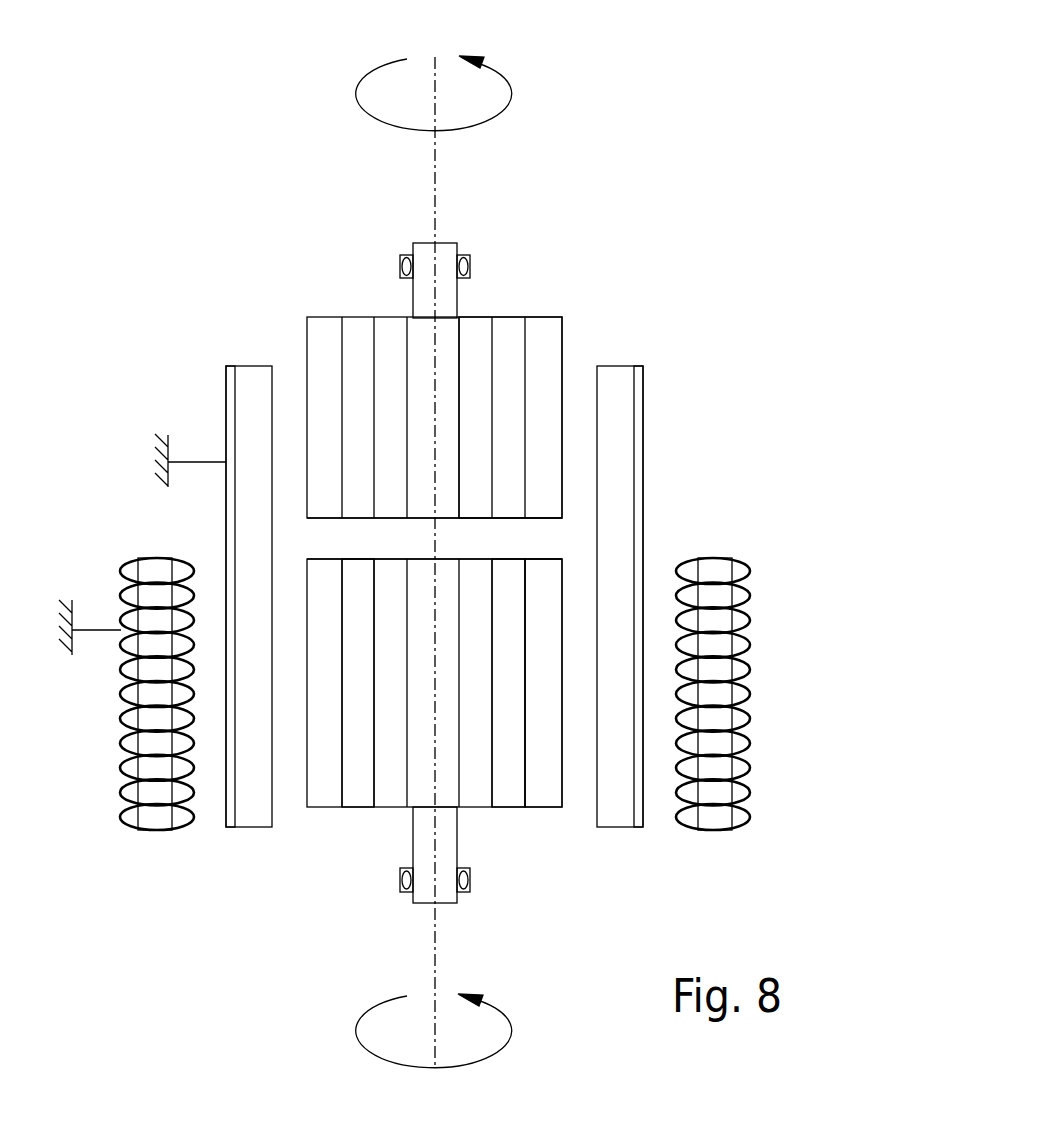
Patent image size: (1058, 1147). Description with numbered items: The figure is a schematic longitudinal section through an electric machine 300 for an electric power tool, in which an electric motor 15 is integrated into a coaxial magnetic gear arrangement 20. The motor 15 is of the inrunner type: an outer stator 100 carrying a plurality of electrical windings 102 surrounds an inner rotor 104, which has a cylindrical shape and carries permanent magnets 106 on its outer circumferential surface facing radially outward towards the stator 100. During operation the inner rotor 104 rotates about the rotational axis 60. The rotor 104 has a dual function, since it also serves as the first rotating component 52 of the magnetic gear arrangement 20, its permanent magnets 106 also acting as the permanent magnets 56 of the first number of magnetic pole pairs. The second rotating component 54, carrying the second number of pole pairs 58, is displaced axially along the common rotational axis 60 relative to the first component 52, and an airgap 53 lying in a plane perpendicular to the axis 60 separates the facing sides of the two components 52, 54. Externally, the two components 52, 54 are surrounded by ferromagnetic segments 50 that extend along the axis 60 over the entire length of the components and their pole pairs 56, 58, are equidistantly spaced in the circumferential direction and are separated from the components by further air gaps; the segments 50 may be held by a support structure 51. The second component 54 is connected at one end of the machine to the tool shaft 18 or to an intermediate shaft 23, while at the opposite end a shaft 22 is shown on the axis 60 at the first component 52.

The electric machine 300 is at (662, 106).
The coaxial magnetic gear arrangement 20 is at (790, 424).
The electric motor 15 is at (788, 703).
The intermediate shaft 23 is at (402, 239).
The tool shaft 18 is at (423, 252).
The rotational axis 60 is at (435, 215).
The second rotating component 54 is at (505, 317).
The second number of pole pairs 58 is at (540, 443).
The airgap 53 is at (540, 538).
The first rotating component 52 is at (320, 807).
The permanent magnets of the first number of magnetic pole pairs 56 is at (365, 787).
The permanent magnets 106 is at (505, 778).
The inner rotor 104 is at (545, 807).
The lower shaft end 22 is at (423, 888).
The ferromagnetic segments 50 is at (255, 815).
The support structure 51 is at (232, 813).
The outer stator 100 is at (151, 723).
The electrical windings 102 is at (121, 751).